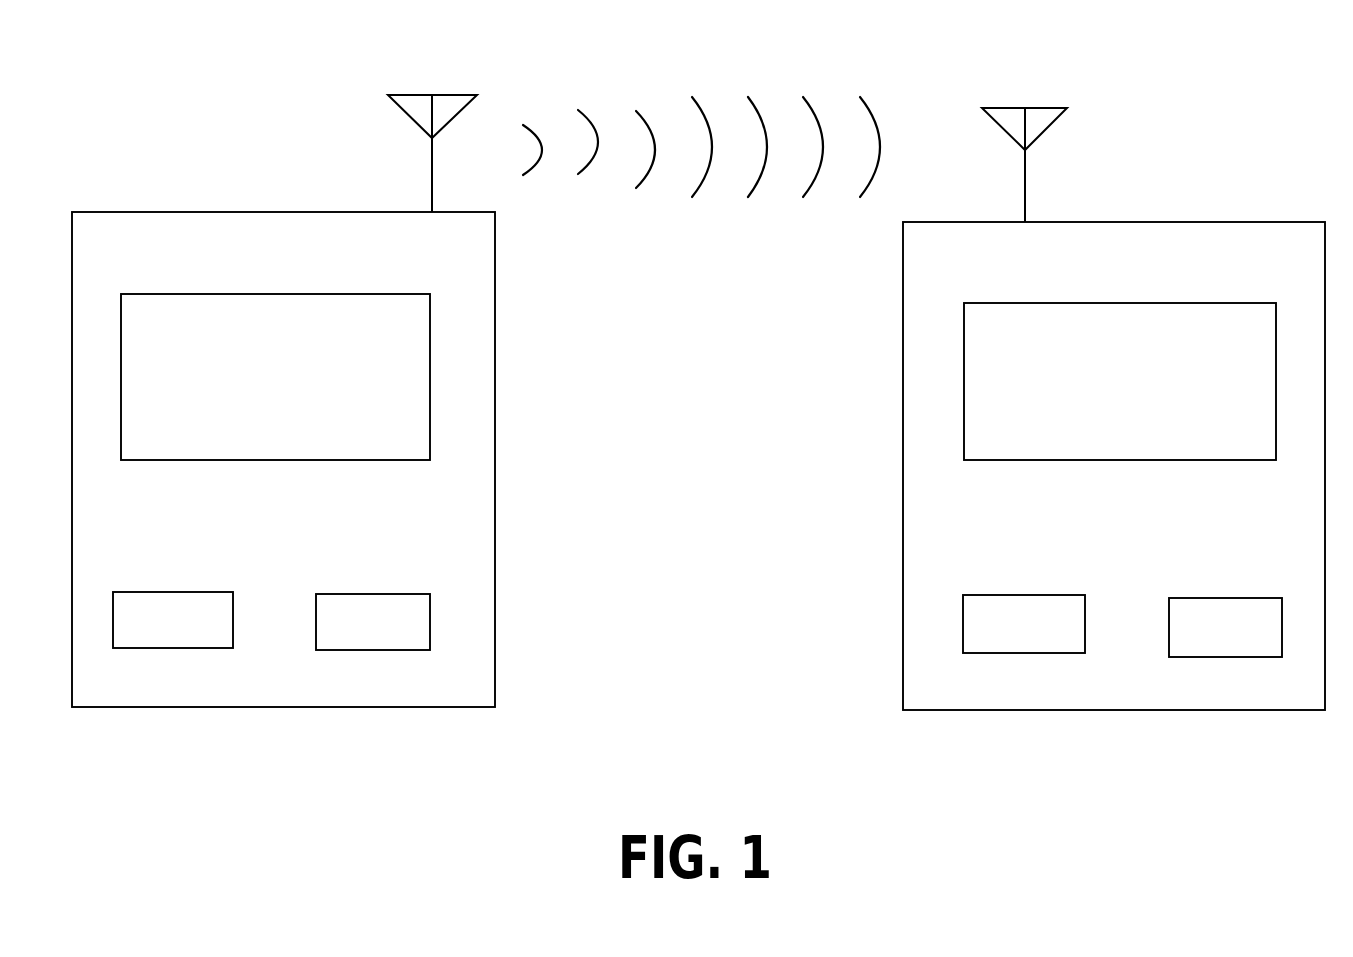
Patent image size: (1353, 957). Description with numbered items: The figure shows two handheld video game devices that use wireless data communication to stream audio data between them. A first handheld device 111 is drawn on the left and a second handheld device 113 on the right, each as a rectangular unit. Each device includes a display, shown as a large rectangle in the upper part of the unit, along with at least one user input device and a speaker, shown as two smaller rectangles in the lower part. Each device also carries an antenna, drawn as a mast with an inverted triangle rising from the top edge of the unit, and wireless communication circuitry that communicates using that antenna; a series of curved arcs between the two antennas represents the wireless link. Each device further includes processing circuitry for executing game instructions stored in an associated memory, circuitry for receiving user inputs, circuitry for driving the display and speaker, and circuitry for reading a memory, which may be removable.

The first handheld device 111 is at (122, 212).
The second handheld device 113 is at (1190, 222).